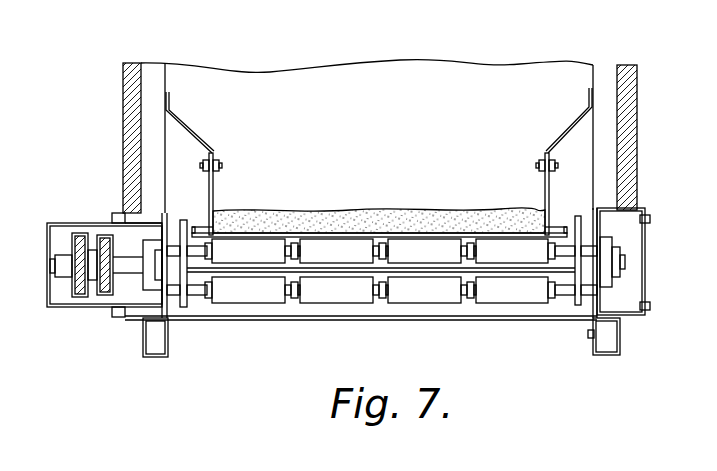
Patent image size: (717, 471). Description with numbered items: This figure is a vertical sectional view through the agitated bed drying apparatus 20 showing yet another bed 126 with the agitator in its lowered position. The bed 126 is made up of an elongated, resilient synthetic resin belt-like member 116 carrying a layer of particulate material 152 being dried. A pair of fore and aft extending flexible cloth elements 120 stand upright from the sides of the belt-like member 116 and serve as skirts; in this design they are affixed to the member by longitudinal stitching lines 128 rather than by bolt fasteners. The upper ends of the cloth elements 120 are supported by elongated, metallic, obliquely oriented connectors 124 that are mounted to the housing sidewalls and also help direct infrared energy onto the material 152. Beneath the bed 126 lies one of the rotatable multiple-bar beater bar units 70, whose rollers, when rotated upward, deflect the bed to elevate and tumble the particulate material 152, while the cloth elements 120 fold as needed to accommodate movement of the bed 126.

The agitated bed drying apparatus 20 is at (654, 89).
The beater bar unit 70 is at (318, 314).
The belt-like element 116 is at (359, 233).
The cloth element 120 is at (214, 191).
The connector 124 is at (180, 123).
The bed 126 is at (413, 116).
The stitching line 128 is at (191, 228).
The particulate material 152 is at (470, 212).